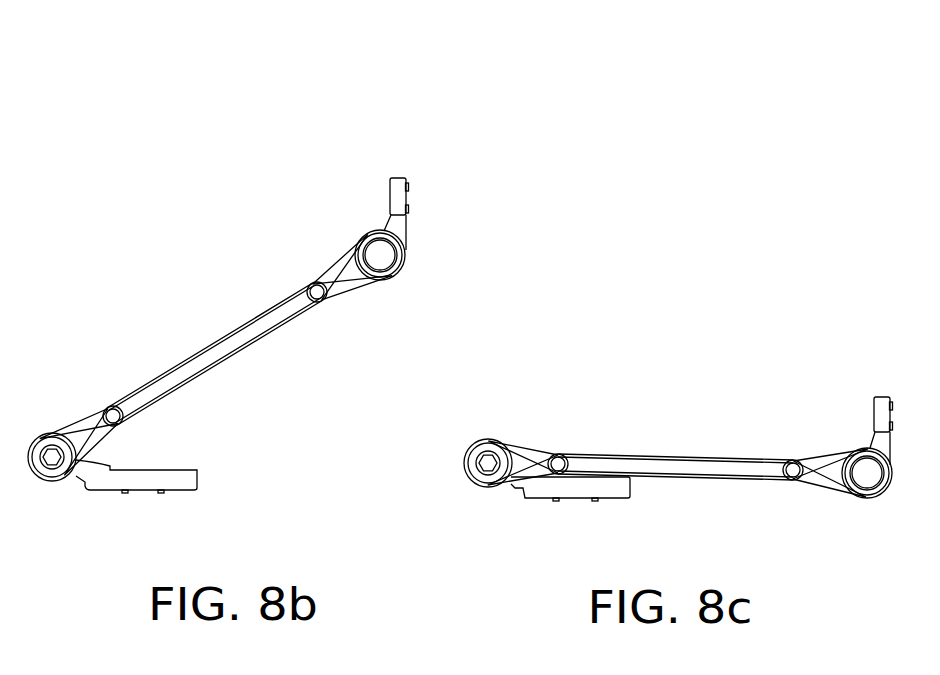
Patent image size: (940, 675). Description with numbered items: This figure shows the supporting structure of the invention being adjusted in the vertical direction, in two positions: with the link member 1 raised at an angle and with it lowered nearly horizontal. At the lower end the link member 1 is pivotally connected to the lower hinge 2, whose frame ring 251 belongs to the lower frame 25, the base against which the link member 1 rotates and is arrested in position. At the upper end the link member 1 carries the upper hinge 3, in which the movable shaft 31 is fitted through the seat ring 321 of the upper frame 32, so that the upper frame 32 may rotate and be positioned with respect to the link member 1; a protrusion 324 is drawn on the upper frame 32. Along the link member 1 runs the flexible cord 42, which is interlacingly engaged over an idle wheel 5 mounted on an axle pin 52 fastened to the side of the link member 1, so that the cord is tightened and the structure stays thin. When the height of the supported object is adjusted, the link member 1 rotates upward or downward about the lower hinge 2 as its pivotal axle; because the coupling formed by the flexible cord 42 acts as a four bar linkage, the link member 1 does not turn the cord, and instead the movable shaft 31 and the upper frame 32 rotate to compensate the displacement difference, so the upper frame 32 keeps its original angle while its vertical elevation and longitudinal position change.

In FIG. 8b, the link member 1 is at (236, 345).
In FIG. 8c, the link member 1 is at (683, 481).
In FIG. 8b, the lower hinge 2 is at (103, 438).
In FIG. 8c, the lower hinge 2 is at (547, 442).
In FIG. 8b, the upper hinge 3 is at (387, 188).
In FIG. 8c, the upper hinge 3 is at (845, 445).
In FIG. 8b, the idle wheel 5 is at (314, 300).
In FIG. 8c, the idle wheel 5 is at (792, 460).
In FIG. 8b, the lower frame 25 is at (137, 492).
In FIG. 8c, the lower frame 25 is at (548, 500).
In FIG. 8b, the movable shaft 31 is at (384, 257).
In FIG. 8c, the movable shaft 31 is at (863, 468).
In FIG. 8b, the upper frame 32 is at (427, 153).
In FIG. 8c, the upper frame 32 is at (872, 375).
In FIG. 8b, the flexible cord 42 is at (347, 282).
In FIG. 8c, the flexible cord 42 is at (822, 486).
In FIG. 8b, the axle pin 52 is at (298, 280).
In FIG. 8c, the axle pin 52 is at (791, 483).
In FIG. 8b, the frame ring 251 is at (50, 433).
In FIG. 8c, the frame ring 251 is at (490, 438).
In FIG. 8b, the seat ring 321 is at (370, 230).
In FIG. 8c, the seat ring 321 is at (873, 500).
In FIG. 8b, the protrusions 324 is at (397, 178).
In FIG. 8c, the protrusions 324 is at (883, 397).